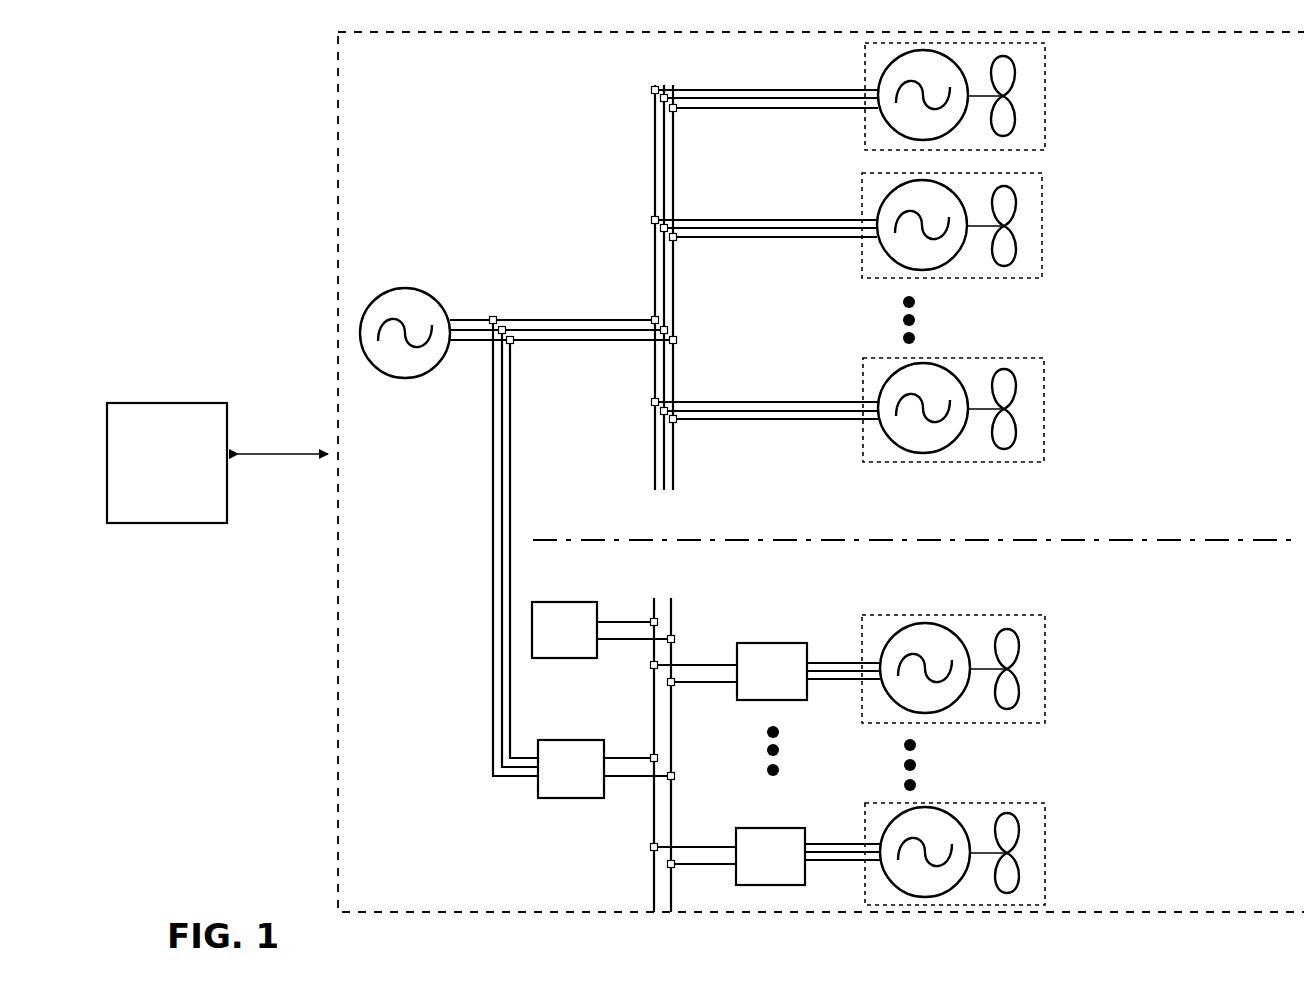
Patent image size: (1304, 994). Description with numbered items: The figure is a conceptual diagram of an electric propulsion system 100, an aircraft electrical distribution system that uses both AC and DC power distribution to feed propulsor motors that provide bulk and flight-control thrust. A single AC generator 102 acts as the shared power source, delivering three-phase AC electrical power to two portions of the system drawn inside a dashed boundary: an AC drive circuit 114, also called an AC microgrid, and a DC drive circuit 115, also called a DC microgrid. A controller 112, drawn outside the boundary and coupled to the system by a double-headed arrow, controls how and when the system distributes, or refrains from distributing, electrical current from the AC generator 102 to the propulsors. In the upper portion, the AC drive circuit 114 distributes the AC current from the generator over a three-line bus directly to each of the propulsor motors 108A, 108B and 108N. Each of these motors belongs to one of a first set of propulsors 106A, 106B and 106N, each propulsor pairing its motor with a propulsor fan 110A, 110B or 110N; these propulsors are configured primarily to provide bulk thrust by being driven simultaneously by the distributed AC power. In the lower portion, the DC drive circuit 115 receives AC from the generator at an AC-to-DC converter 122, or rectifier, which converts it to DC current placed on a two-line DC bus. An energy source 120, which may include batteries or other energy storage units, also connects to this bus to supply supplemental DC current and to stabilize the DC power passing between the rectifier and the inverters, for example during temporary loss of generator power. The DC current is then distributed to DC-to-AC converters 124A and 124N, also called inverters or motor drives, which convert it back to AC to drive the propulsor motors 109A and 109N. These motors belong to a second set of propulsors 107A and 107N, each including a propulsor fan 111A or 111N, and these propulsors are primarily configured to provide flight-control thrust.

The electric propulsion system 100 is at (211, 88).
The AC generator 102 is at (405, 333).
The propulsor 106A is at (1045, 140).
The propulsor 106B is at (1042, 268).
The propulsor 106N is at (1044, 448).
The propulsor 107A is at (1045, 715).
The propulsor 107N is at (1045, 895).
The propulsor motor 108A is at (923, 95).
The propulsor motor 108B is at (922, 225).
The propulsor motor 108N is at (923, 408).
The propulsor motor 109A is at (925, 668).
The propulsor motor 109N is at (925, 852).
The propulsor fan 110A is at (1023, 96).
The propulsor fan 110B is at (1022, 226).
The propulsor fan 110N is at (1022, 410).
The propulsor fan 111A is at (1024, 670).
The propulsor fan 111N is at (1024, 852).
The controller 112 is at (217, 463).
The AC drive circuit 114 is at (943, 266).
The DC drive circuit 115 is at (891, 755).
The energy source 120 is at (601, 630).
The AC-to-DC converter 122 is at (604, 769).
The DC-to-AC converter 124A is at (767, 671).
The DC-to-AC converter 124N is at (767, 856).